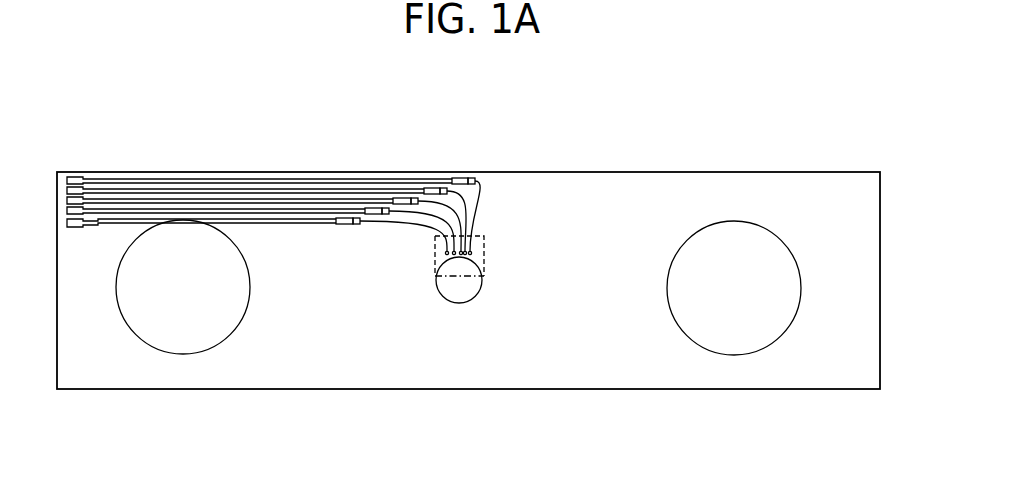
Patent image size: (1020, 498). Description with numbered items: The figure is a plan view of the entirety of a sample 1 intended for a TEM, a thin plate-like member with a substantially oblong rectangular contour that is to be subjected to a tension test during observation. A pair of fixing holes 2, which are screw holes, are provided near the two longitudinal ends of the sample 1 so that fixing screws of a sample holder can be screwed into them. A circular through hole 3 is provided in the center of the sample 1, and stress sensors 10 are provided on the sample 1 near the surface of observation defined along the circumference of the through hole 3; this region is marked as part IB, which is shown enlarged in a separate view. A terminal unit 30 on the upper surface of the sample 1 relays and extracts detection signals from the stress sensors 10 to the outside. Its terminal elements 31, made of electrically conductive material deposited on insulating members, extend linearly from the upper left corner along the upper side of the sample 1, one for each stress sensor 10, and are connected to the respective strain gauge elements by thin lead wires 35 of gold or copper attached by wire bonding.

The sample 1 is at (571, 97).
The fixing holes 2 is at (160, 345).
The through hole 3 is at (458, 303).
The stress sensors 10 is at (486, 259).
The terminal unit 30 is at (271, 151).
The terminal elements 31 is at (217, 199).
The lead wires 35 is at (492, 224).
The part IB is at (494, 237).